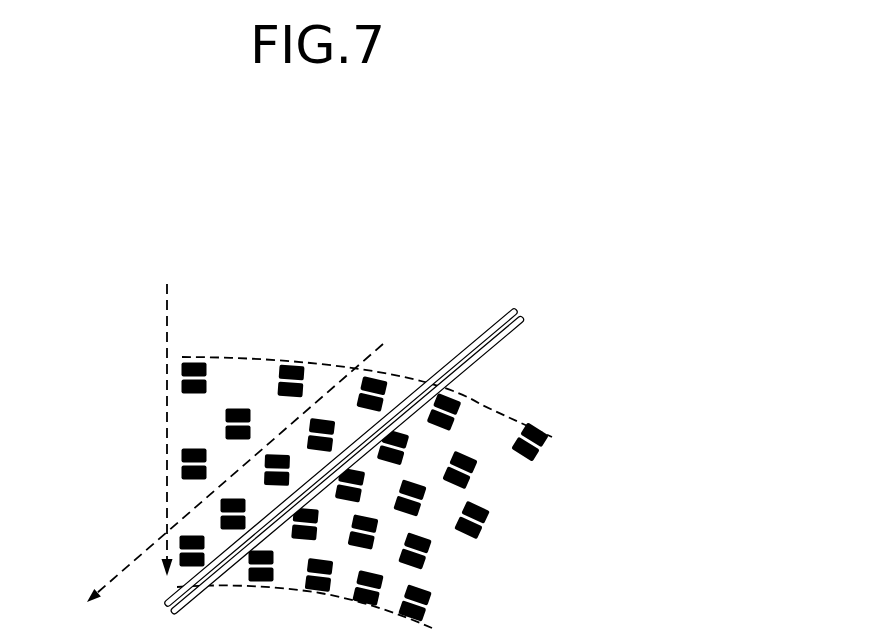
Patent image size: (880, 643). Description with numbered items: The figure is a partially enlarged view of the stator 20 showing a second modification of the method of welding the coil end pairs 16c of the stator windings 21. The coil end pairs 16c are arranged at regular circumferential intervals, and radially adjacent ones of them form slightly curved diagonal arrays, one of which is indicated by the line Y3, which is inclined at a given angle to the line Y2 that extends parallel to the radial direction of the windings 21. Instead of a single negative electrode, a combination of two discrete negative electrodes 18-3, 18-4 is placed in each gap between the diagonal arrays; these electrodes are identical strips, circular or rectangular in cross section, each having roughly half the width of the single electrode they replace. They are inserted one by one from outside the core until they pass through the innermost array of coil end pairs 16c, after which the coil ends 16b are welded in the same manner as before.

The stator 20 is at (460, 240).
The stator windings 21 is at (505, 409).
The coil end pairs 16c is at (292, 352).
The coil ends 16b is at (490, 517).
The negative electrode 18-3 is at (490, 328).
The negative electrode 18-4 is at (523, 325).
The line Y2 is at (169, 416).
The line Y3 is at (248, 460).